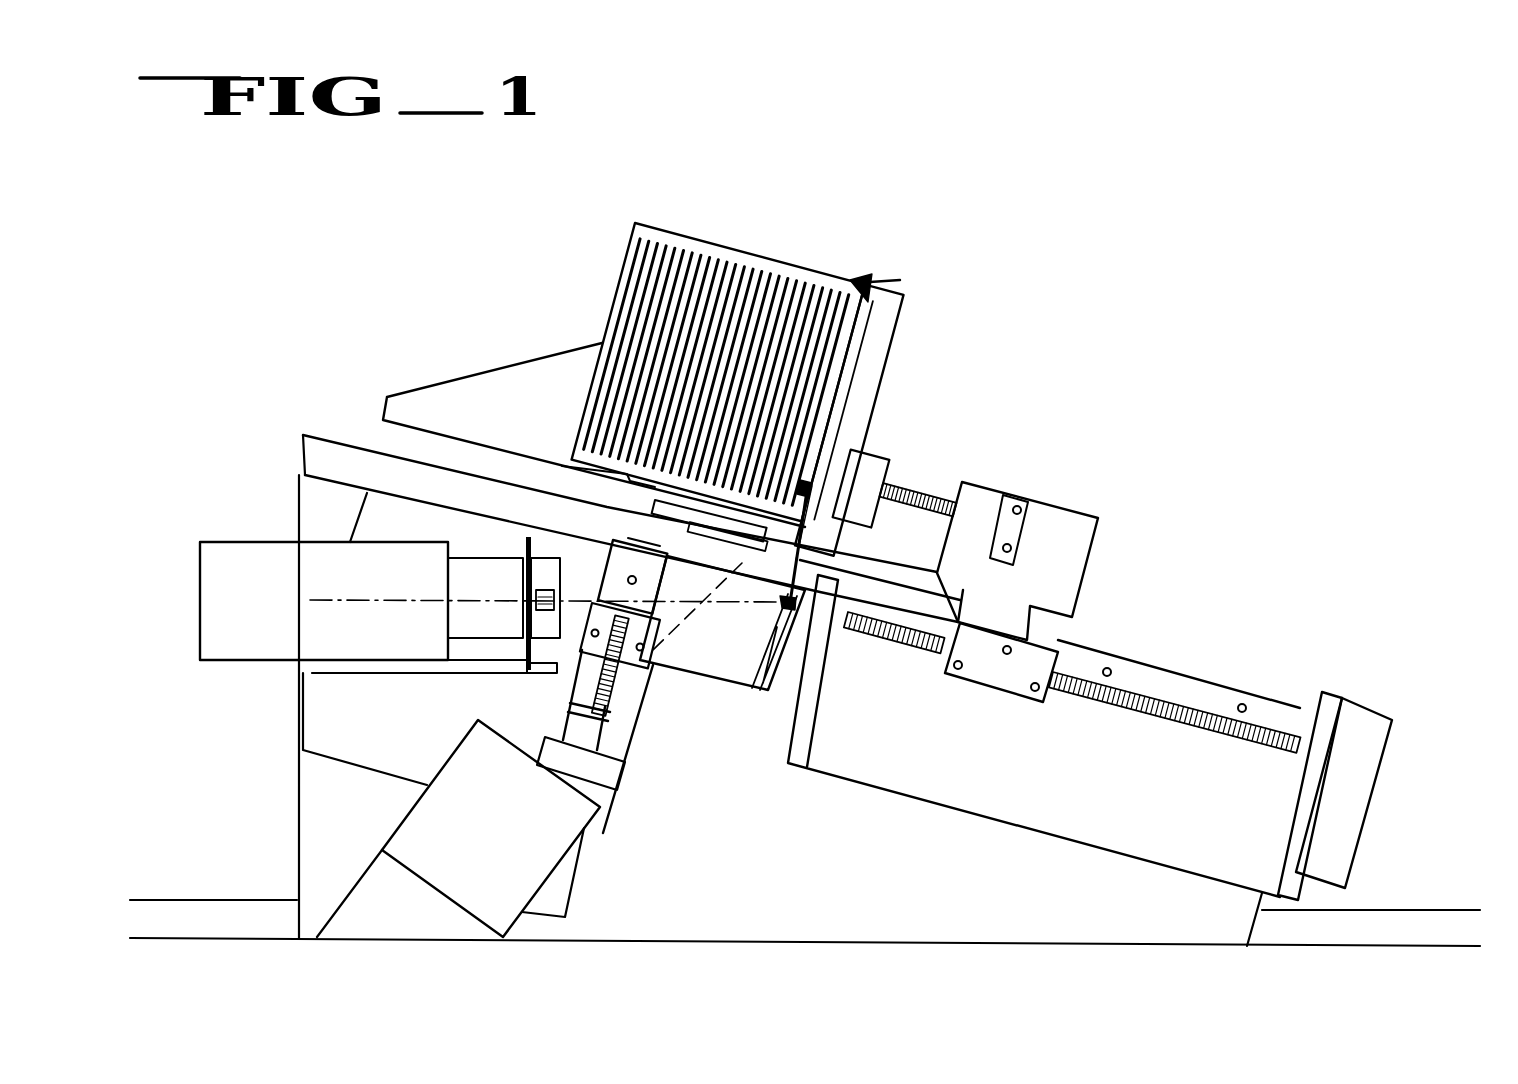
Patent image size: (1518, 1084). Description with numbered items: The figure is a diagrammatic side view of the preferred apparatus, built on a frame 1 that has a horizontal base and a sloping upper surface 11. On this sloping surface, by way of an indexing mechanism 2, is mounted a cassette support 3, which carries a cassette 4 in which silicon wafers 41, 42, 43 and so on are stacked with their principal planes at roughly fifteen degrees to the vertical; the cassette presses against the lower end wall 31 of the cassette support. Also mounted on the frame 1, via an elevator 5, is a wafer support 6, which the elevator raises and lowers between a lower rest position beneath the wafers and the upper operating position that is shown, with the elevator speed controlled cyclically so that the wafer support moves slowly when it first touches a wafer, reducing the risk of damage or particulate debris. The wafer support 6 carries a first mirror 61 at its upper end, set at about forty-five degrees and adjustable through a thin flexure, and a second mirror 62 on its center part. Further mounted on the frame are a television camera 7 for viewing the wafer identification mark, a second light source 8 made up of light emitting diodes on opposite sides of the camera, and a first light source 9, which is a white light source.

The frame 1 is at (297, 467).
The sloping upper surface 11 is at (338, 460).
The indexing mechanism 2 is at (1092, 555).
The cassette support 3 is at (418, 400).
The lower end wall 31 is at (870, 410).
The cassette 4 is at (708, 242).
The silicon wafer 41 is at (873, 303).
The silicon wafer 42 is at (880, 278).
The silicon wafer 43 is at (851, 285).
The elevator 5 is at (657, 663).
The wafer support 6 is at (765, 650).
The first mirror 61 is at (805, 488).
The second mirror 62 is at (790, 603).
The television camera 7 is at (250, 640).
The second light source 8 is at (546, 585).
The first light source 9 is at (547, 842).